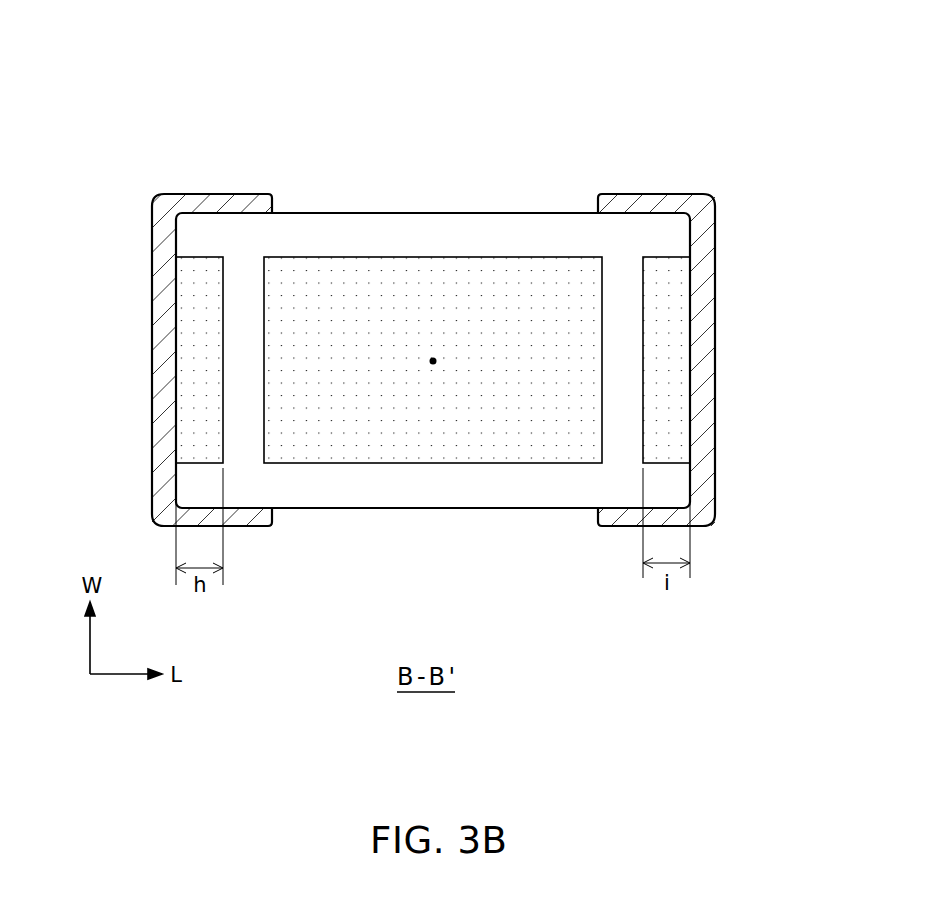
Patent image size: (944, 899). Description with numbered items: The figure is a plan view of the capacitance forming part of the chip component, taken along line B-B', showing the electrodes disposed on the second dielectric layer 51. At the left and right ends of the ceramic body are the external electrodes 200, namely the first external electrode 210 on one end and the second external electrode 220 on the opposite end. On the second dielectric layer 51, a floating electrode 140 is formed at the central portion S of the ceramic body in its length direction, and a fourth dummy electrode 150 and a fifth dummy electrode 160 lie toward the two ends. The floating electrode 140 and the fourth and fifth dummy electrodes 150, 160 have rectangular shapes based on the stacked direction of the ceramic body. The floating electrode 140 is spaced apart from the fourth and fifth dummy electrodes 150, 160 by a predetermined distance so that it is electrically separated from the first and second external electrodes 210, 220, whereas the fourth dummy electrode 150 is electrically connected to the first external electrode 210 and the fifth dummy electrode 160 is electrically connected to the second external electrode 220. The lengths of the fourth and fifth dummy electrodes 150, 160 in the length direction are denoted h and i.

The external electrodes 200 is at (433, 274).
The first external electrode 210 is at (253, 194).
The second external electrode 220 is at (616, 301).
The second dielectric layer 51 is at (333, 499).
The floating electrode 140 is at (533, 448).
The fourth dummy electrode 150 is at (188, 337).
The fifth dummy electrode 160 is at (677, 337).
The central portion S is at (433, 364).